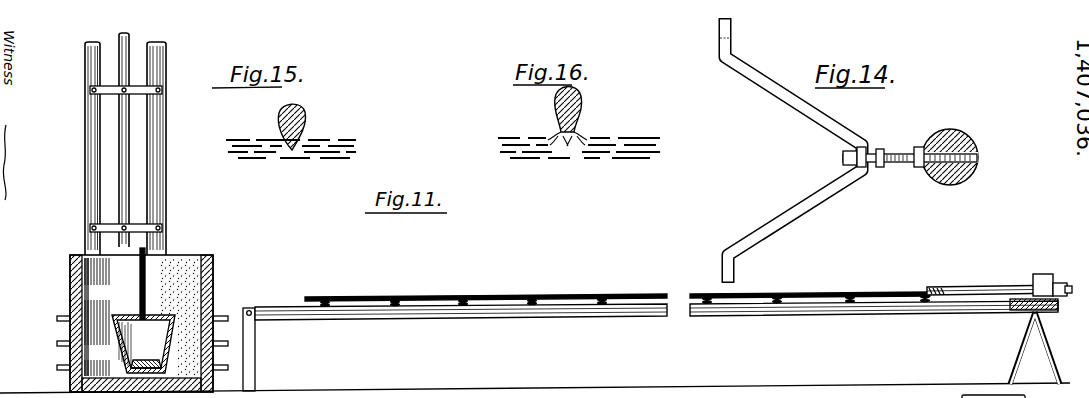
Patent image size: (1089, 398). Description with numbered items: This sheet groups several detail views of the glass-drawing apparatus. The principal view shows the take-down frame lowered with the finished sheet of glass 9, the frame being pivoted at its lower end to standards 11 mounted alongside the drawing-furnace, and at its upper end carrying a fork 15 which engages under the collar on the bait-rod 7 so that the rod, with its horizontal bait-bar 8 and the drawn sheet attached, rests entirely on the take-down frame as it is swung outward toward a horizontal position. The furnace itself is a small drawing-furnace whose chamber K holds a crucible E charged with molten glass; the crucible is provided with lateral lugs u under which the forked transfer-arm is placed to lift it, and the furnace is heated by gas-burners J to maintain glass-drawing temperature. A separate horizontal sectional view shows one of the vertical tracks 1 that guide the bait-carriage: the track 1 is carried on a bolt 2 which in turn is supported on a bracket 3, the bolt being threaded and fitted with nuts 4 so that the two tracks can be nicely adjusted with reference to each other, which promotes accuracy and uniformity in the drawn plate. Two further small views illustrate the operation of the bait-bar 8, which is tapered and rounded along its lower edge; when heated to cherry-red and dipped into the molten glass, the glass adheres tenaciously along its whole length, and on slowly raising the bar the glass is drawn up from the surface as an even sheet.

In FIG. 11, the furnace chamber K is at (178, 300).
In FIG. 11, the lateral lugs u is at (110, 322).
In FIG. 11, the crucible E is at (152, 320).
In FIG. 11, the gas-burners J is at (57, 367).
In FIG. 11, the standards 11 is at (256, 355).
In FIG. 11, the sheet 9 is at (698, 294).
In FIG. 11, the bait-bar 8 is at (942, 287).
In FIG. 15, the bait-bar 8 is at (305, 112).
In FIG. 16, the bait-bar 8 is at (583, 110).
In FIG. 11, the bait-rod 7 is at (976, 287).
In FIG. 11, the fork 15 is at (1036, 275).
In FIG. 14, the vertical tracks 1 is at (946, 131).
In FIG. 14, the bolts 2 is at (902, 164).
In FIG. 14, the brackets 3 is at (791, 150).
In FIG. 14, the nuts 4 is at (918, 149).